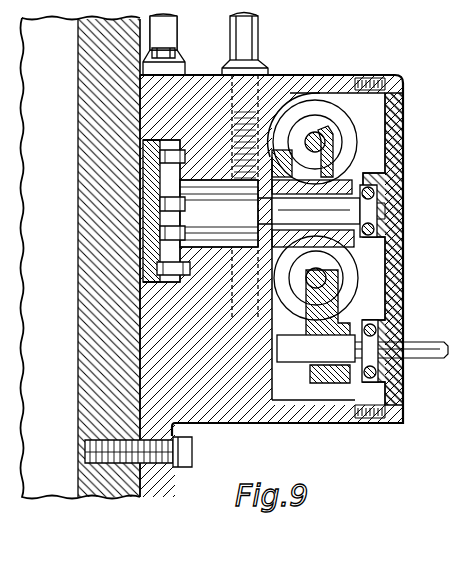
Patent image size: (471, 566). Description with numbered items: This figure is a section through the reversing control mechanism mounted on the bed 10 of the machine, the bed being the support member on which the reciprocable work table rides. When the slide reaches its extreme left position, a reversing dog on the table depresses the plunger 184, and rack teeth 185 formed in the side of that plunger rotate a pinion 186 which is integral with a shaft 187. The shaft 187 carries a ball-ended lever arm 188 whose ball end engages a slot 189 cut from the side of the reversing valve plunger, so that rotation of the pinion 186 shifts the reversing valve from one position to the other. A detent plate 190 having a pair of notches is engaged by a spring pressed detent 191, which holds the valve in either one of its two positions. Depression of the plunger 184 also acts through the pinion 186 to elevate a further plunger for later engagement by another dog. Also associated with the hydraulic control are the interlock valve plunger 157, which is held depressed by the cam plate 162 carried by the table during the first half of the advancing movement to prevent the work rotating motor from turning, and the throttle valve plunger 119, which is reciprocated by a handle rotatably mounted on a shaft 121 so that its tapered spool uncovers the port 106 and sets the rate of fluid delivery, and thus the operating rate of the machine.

The port 106 is at (39, 9).
The bed 10 is at (80, 122).
The cam plate 162 is at (165, 31).
The plunger 157 is at (176, 57).
The plunger 184 is at (250, 32).
The spring pressed detent 191 is at (312, 132).
The rack teeth 185 is at (281, 152).
The slot 189 is at (305, 133).
The ball-ended lever arm 188 is at (333, 172).
The shaft 187 is at (345, 212).
The detent plate 190 is at (342, 255).
The throttle valve plunger 119 is at (318, 278).
The shaft 121 is at (405, 348).
The pinion 186 is at (157, 212).